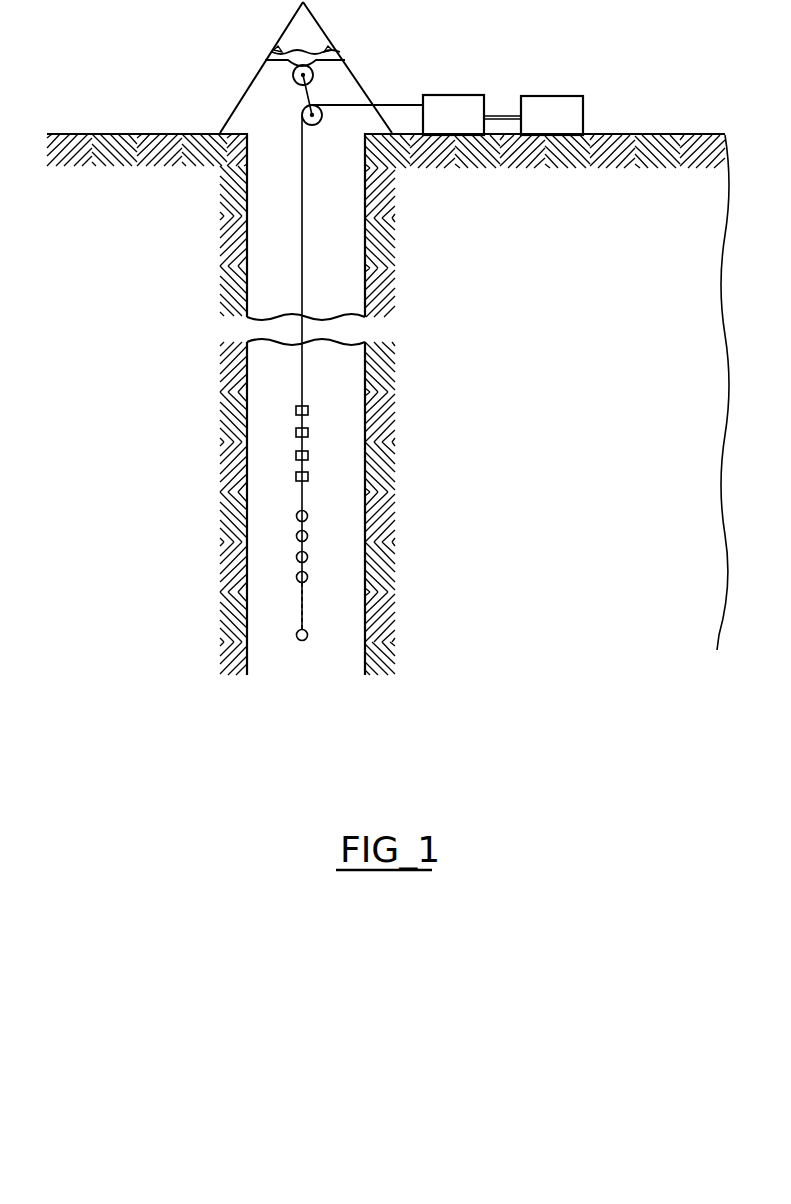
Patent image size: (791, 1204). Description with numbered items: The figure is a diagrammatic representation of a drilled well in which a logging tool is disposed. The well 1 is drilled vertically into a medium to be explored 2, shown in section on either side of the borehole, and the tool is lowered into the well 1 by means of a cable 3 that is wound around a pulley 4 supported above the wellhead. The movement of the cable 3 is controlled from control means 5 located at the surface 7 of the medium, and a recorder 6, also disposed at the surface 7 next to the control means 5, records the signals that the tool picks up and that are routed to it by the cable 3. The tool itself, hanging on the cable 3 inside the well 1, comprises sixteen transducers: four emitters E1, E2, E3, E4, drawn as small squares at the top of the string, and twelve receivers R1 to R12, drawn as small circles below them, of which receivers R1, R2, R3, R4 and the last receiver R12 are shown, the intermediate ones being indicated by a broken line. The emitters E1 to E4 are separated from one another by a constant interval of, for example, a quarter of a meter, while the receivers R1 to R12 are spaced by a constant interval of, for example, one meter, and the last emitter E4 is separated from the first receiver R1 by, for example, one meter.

The well 1 is at (249, 152).
The medium to be explored 2 is at (112, 156).
The cable 3 is at (396, 103).
The pulley 4 is at (318, 125).
The control means 5 is at (461, 95).
The recorder 6 is at (558, 96).
The surface 7 is at (658, 134).
The emitter E1 is at (308, 410).
The emitter E2 is at (308, 433).
The emitter E3 is at (308, 456).
The emitter E4 is at (308, 477).
The receiver R1 is at (308, 516).
The receiver R2 is at (308, 536).
The receiver R3 is at (308, 557).
The receiver R4 is at (308, 577).
The receiver R12 is at (305, 641).